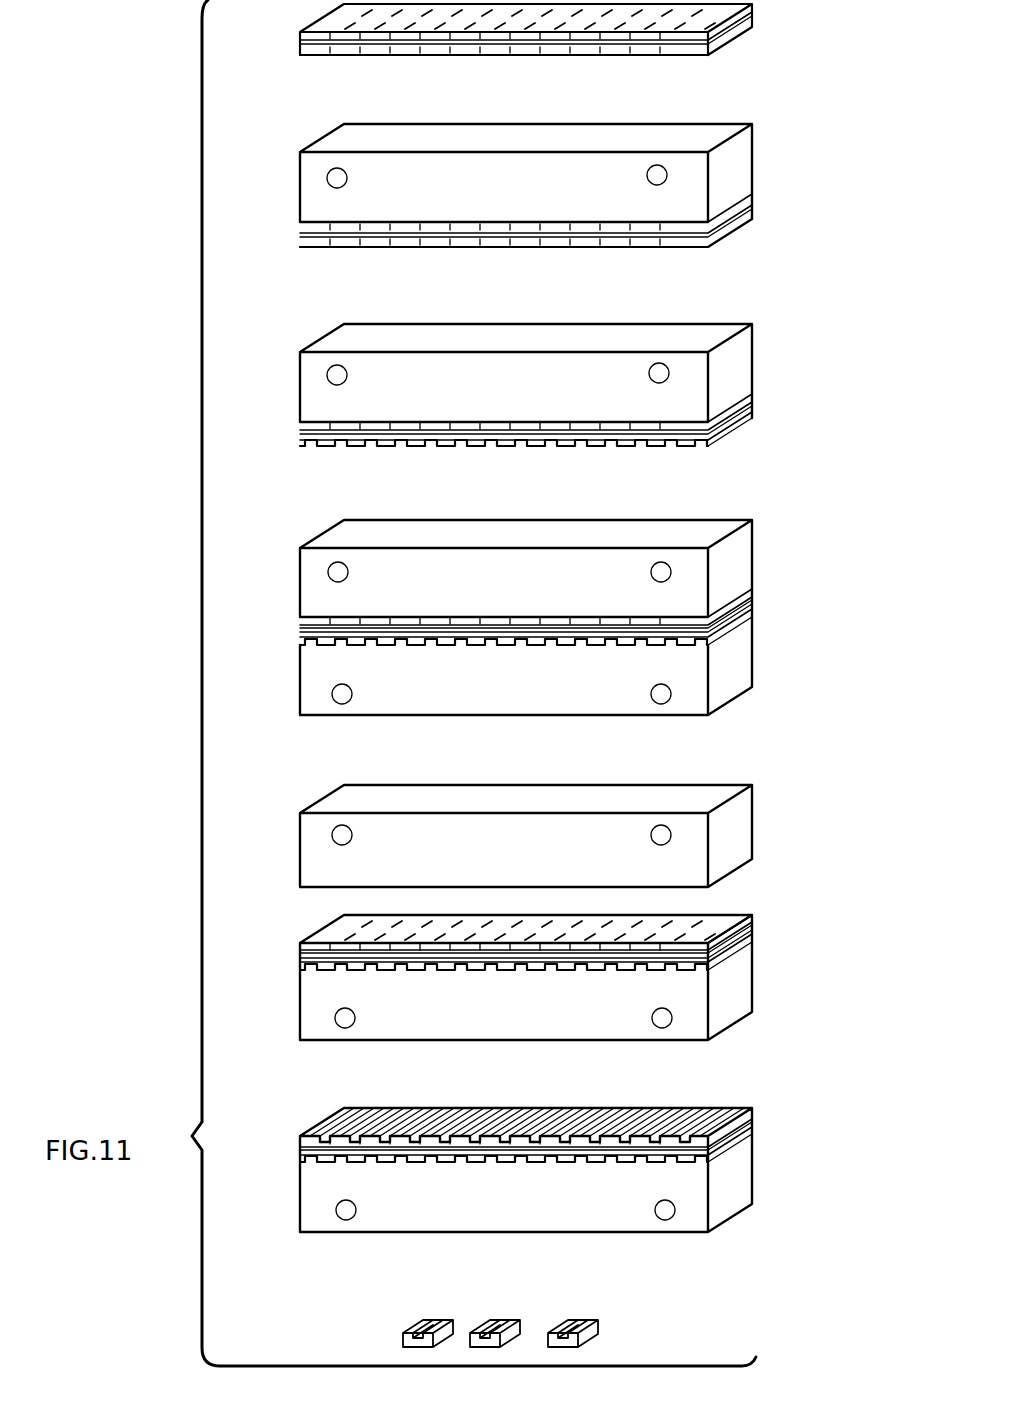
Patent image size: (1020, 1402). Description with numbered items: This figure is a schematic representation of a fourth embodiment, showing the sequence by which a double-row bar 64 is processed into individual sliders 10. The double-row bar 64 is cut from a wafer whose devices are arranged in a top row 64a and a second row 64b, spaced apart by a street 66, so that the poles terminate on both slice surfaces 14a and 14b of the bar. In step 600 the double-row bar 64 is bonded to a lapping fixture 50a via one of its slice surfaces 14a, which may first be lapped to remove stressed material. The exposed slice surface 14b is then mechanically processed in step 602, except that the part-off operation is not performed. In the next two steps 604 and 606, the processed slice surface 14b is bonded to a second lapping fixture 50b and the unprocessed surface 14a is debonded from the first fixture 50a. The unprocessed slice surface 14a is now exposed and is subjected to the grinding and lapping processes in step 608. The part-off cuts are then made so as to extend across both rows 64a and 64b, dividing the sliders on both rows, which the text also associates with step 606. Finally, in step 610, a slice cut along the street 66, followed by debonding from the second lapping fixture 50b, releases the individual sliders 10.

The slider 10 is at (444, 1303).
The slice surface 14a is at (712, 8).
The slice surface 14b is at (682, 281).
The lapping fixture 50a is at (834, 165).
The second lapping fixture 50b is at (748, 668).
The double-row bar 64 is at (718, 66).
The top row 64a is at (300, 36).
The second row 64b is at (300, 50).
The street 66 is at (752, 36).
The step 600 is at (515, 72).
The step 602 is at (515, 268).
The step 604 is at (515, 468).
The step 606 is at (515, 730).
The step 608 is at (517, 1053).
The step 610 is at (517, 1250).